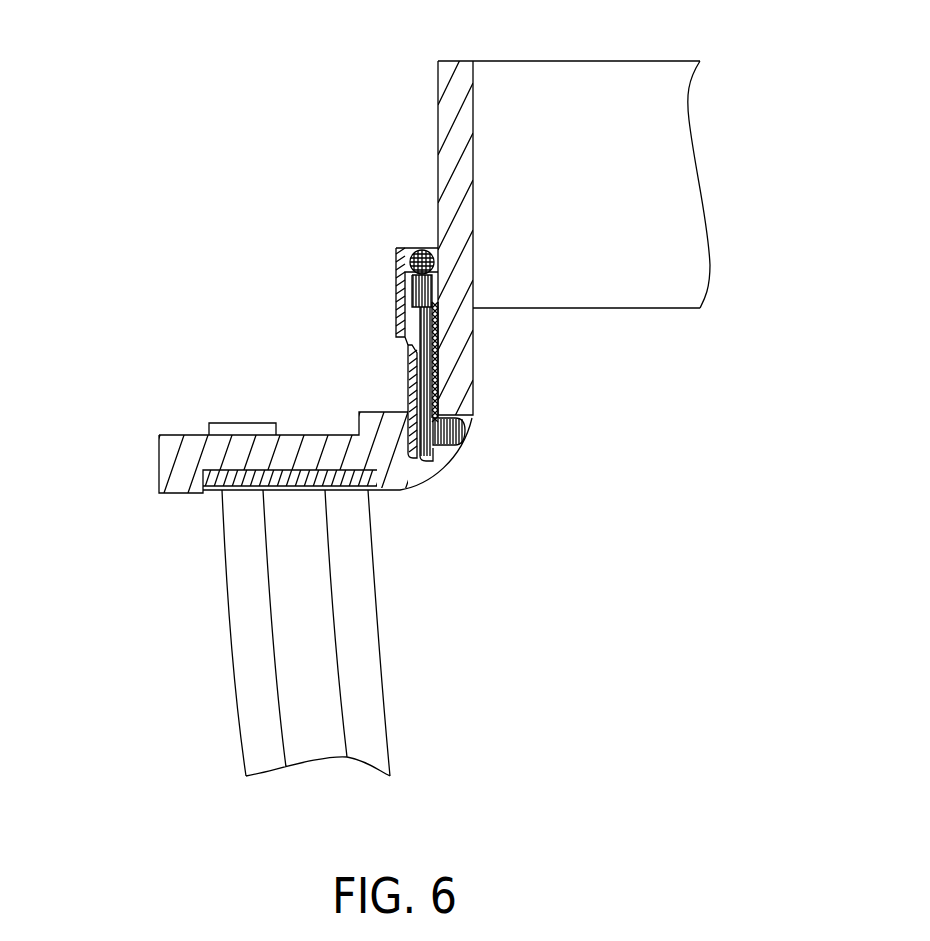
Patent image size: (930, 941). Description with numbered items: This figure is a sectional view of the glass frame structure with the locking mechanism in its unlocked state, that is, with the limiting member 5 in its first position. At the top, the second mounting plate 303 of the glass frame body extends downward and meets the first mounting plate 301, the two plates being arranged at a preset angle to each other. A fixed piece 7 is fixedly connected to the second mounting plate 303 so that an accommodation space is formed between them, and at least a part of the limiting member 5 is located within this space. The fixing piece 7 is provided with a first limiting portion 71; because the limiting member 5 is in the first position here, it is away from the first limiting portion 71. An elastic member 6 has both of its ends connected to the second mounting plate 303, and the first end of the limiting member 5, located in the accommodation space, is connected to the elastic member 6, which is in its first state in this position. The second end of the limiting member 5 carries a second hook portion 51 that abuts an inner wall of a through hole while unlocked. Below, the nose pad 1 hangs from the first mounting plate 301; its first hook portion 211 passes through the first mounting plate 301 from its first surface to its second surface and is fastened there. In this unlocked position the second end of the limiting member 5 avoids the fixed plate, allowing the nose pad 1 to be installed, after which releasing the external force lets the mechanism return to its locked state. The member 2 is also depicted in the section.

The nose pad 1 is at (243, 620).
The sealing member 2 is at (504, 427).
The limiting member 5 is at (428, 337).
The second hook portion 51 is at (463, 447).
The elastic member 6 is at (412, 260).
The fixed piece 7 is at (403, 287).
The first limiting portion 71 is at (408, 353).
The first hook portion 211 is at (213, 423).
The first mounting plate 301 is at (177, 453).
The second mounting plate 303 is at (443, 119).